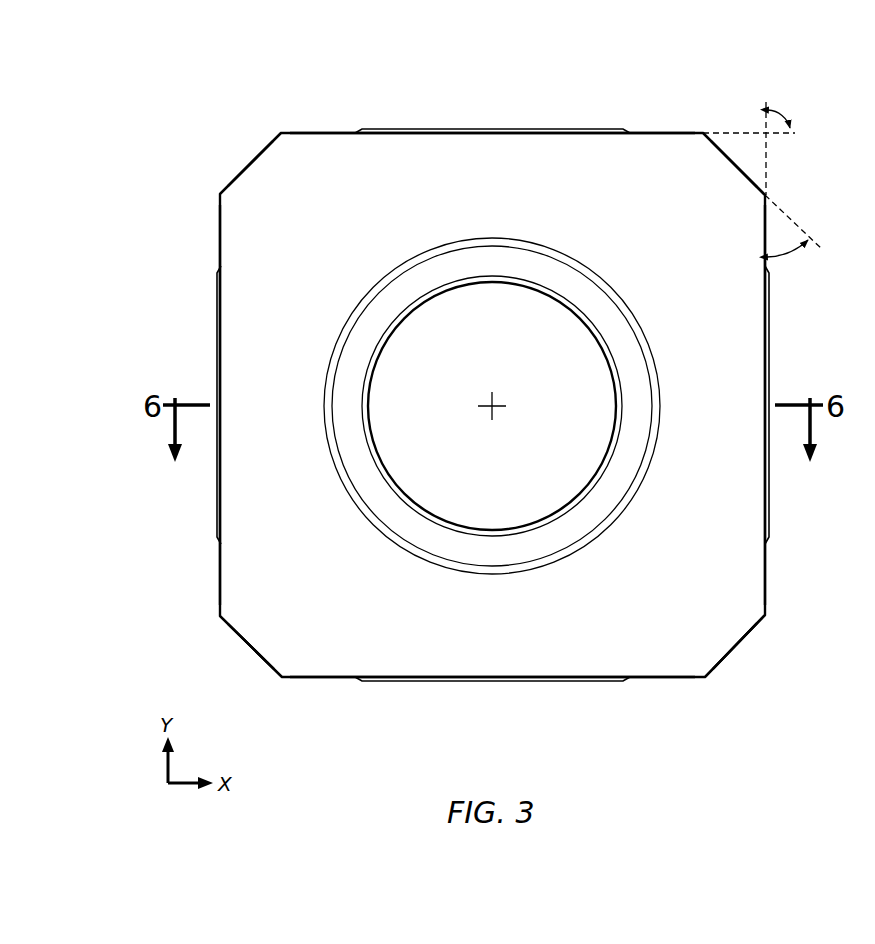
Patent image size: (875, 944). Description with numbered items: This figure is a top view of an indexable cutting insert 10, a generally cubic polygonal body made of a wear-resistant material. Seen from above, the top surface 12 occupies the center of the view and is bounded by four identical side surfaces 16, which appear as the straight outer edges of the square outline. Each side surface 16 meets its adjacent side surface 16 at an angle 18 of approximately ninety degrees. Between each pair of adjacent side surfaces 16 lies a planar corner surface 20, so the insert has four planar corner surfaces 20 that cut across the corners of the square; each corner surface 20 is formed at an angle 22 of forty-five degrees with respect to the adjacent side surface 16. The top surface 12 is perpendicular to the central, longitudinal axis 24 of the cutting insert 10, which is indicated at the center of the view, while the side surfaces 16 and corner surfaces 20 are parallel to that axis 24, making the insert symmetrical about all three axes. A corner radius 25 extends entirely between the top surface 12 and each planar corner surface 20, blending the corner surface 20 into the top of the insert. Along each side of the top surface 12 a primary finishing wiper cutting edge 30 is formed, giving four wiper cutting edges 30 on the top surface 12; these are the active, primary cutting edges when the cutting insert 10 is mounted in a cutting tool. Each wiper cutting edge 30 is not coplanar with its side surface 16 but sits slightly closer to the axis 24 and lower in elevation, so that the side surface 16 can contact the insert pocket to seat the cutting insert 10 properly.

The cutting insert 10 is at (172, 94).
The top surface 12 is at (402, 175).
The side surface 16 is at (567, 121).
The angle 18 is at (786, 117).
The planar corner surface 20 is at (245, 160).
The angle 22 is at (789, 252).
The central, longitudinal axis 24 is at (493, 404).
The corner radius 25 is at (274, 167).
The primary finishing wiper cutting edge 30 is at (470, 129).